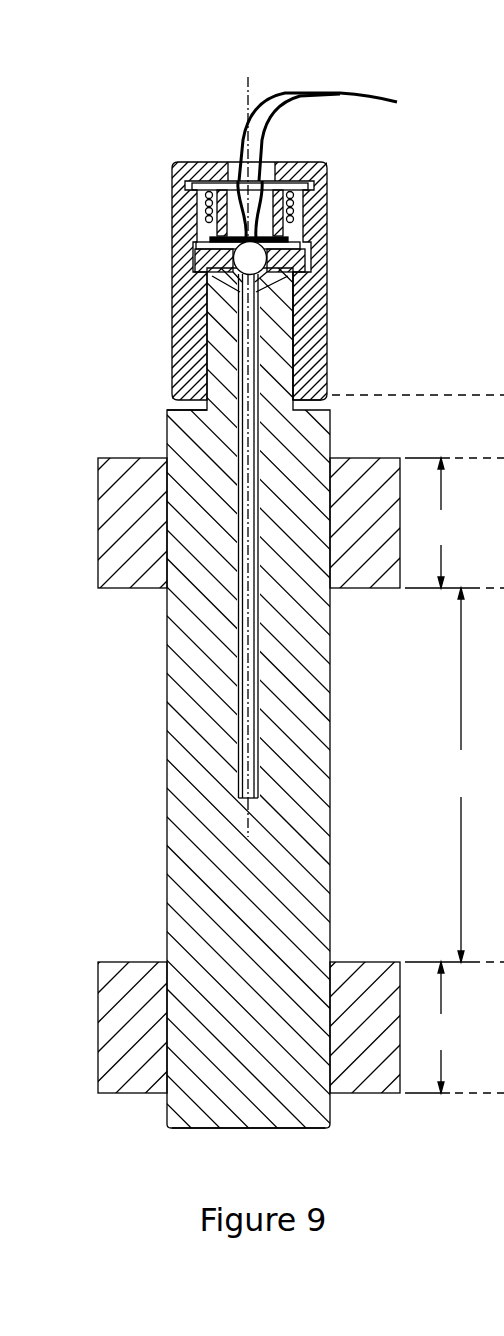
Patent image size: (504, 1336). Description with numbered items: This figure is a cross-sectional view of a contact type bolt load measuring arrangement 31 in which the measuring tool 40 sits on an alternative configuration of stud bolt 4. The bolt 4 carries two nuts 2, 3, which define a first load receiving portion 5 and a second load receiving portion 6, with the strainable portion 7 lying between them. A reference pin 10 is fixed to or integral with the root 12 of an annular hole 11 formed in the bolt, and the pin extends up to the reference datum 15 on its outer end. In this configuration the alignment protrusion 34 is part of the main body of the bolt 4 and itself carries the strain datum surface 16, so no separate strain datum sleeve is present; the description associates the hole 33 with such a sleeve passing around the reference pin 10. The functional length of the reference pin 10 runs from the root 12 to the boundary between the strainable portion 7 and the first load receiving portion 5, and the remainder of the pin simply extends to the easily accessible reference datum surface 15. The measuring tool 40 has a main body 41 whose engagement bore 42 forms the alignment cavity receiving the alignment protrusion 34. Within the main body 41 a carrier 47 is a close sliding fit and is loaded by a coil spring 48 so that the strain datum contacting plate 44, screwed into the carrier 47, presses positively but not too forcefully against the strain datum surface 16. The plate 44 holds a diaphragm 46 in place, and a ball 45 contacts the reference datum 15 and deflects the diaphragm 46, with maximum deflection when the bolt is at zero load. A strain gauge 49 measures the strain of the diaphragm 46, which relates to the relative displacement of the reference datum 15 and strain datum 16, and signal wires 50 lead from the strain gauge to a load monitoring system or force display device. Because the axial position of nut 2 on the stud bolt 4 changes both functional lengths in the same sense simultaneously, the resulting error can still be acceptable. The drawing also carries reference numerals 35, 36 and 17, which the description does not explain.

The bolt load measuring arrangement 31 is at (114, 80).
The measuring tool 40 is at (389, 174).
The engagement bore 42 is at (200, 331).
The coil spring 48 is at (296, 166).
The signal wires 50 is at (343, 92).
The strain gauge 49 is at (207, 222).
The carrier 47 is at (308, 215).
The main body 41 is at (322, 241).
The diaphragm 46 is at (198, 246).
The strain datum contacting plate 44 is at (213, 267).
The ball 45 is at (272, 272).
The strain datum surface 16 is at (232, 285).
The reference datum 15 is at (266, 291).
The housing side wall 36 is at (306, 358).
The alignment protrusion 34 is at (280, 389).
The hole 33 is at (207, 376).
The gap 35 is at (160, 404).
The nut 2 is at (122, 582).
The nut 3 is at (122, 968).
The bolt 4 is at (192, 1115).
The reference pin 10 is at (242, 649).
The hole 11 is at (240, 712).
The root 12 is at (238, 800).
The outlet channel 17 is at (257, 801).
The first load receiving portion 5 is at (454, 523).
The strainable portion 7 is at (461, 775).
The second load receiving portion 6 is at (454, 1027).